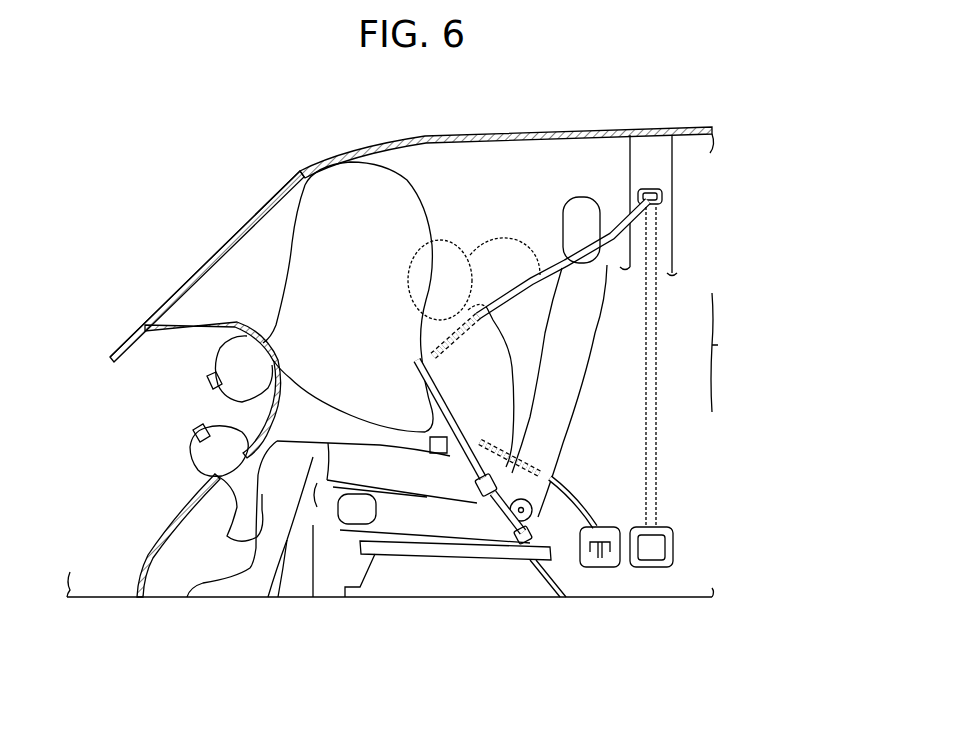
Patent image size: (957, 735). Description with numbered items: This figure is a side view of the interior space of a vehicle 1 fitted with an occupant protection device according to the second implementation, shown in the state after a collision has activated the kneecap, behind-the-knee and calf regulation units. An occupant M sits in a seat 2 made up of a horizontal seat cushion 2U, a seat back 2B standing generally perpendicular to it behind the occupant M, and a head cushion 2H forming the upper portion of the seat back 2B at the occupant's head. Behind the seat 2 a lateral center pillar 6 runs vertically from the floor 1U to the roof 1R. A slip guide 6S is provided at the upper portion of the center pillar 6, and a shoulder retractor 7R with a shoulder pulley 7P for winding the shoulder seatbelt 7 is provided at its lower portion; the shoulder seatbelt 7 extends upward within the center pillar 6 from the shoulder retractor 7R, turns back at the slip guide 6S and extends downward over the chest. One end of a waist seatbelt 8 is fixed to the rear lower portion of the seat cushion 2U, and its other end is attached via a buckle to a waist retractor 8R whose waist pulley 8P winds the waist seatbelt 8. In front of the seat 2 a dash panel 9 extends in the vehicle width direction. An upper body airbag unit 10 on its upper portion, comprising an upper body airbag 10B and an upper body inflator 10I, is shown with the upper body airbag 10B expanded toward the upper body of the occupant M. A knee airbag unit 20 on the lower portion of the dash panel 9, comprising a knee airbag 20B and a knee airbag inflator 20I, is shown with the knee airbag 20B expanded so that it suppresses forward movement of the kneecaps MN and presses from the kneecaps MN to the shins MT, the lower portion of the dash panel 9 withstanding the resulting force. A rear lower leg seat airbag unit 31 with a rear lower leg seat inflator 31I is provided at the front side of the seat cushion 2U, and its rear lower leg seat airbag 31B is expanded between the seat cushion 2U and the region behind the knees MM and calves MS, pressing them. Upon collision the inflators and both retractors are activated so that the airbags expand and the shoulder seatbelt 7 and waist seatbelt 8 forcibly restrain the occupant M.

The vehicle 1 is at (492, 126).
The roof 1R is at (591, 127).
The floor 1U is at (455, 598).
The seat 2 is at (722, 352).
The head cushion 2H is at (620, 280).
The seat back 2B is at (575, 335).
The seat cushion 2U is at (515, 470).
The center pillar 6 is at (662, 170).
The slip guide 6S is at (664, 202).
The shoulder seatbelt 7 is at (552, 250).
The shoulder retractor 7R is at (674, 532).
The shoulder pulley 7P is at (674, 550).
The waist seatbelt 8 is at (474, 479).
The waist retractor 8R is at (610, 526).
The waist pulley 8P is at (598, 560).
The dash panel 9 is at (226, 328).
The upper body airbag unit 10 is at (203, 361).
The upper body airbag 10B is at (291, 283).
The upper body inflator 10I is at (206, 383).
The knee airbag unit 20 is at (184, 450).
The knee airbag inflator 20I is at (195, 430).
The knee airbag 20B is at (226, 530).
The rear lower leg seat airbag unit 31 is at (378, 525).
The rear lower leg seat inflator 31I is at (378, 512).
The rear lower leg seat airbag 31B is at (313, 590).
The occupant M is at (453, 250).
The behind the knees MM is at (338, 441).
The kneecaps MN is at (310, 440).
The shins MT is at (190, 567).
The calves MS is at (275, 585).